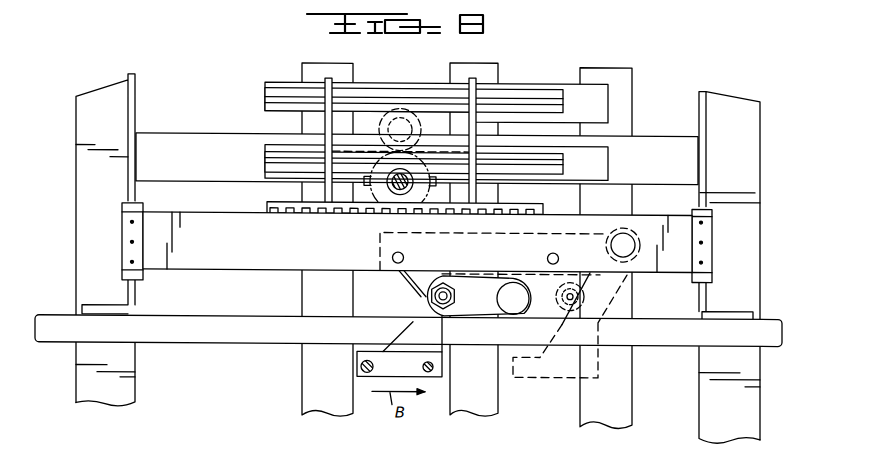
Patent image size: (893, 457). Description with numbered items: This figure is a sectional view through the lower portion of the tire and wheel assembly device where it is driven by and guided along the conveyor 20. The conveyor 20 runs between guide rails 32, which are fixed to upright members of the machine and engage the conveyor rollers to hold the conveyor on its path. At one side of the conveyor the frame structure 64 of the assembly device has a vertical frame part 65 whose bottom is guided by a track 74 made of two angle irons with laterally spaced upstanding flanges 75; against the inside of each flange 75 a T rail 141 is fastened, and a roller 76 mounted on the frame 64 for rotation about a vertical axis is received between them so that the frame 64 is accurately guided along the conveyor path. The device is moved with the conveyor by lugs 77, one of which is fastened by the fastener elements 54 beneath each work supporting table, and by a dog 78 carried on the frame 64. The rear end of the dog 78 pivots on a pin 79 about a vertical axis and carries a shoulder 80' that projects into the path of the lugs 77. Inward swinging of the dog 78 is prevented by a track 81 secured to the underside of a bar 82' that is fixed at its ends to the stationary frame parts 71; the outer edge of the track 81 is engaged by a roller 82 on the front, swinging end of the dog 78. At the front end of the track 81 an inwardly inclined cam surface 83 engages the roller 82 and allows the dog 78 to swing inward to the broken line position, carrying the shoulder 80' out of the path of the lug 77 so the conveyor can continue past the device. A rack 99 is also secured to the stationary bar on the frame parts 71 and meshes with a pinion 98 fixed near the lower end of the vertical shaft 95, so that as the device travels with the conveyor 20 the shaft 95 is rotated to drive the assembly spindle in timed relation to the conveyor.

The conveyor 20 is at (300, 383).
The fixed frame parts 71 is at (133, 104).
The track 74 is at (555, 75).
The upstanding flanges 75 is at (411, 81).
The roller 76 is at (412, 109).
The pinion 98 is at (430, 185).
The vertical shaft 95 is at (392, 181).
The frame structure 64 is at (480, 77).
The T rail 141 is at (463, 95).
The frame part 65 is at (337, 144).
The rack 99 is at (333, 211).
The cross bar 82' is at (417, 257).
The track 81 is at (395, 273).
The guide rails 32 is at (272, 331).
The fastener elements 54 is at (380, 365).
The lug 77 is at (444, 371).
The shoulder 80' is at (465, 311).
The pin 79 is at (458, 293).
The roller 82 is at (517, 311).
The dog 78 is at (476, 320).
The cam surface 83 is at (590, 269).